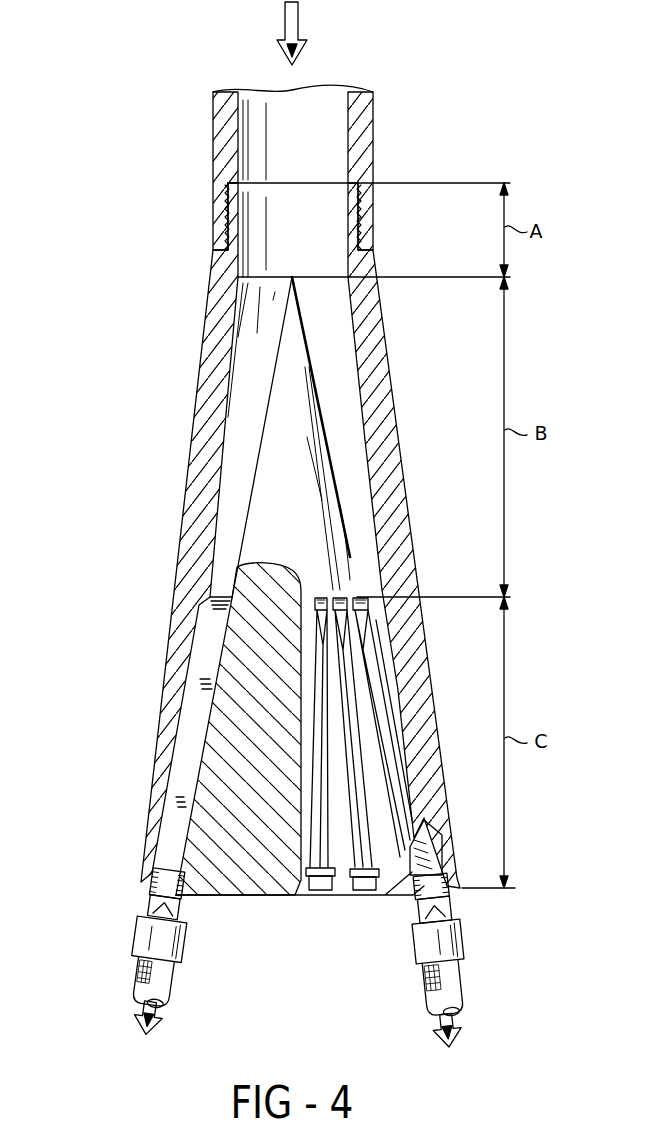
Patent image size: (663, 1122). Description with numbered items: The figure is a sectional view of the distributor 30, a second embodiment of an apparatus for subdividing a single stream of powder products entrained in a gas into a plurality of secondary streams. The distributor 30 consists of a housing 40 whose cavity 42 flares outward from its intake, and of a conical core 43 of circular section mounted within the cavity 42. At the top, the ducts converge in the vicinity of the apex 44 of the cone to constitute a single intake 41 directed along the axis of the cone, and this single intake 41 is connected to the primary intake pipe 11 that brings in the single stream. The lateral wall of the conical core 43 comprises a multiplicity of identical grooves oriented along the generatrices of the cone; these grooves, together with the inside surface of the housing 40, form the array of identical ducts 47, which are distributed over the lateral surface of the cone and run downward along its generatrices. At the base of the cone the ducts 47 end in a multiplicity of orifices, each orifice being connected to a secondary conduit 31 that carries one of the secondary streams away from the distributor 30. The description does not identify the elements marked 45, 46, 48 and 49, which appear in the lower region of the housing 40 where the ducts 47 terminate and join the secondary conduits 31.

The distributor 30 is at (157, 131).
The primary intake pipe 11 is at (362, 143).
The housing 40 is at (190, 507).
The single intake 41 is at (257, 219).
The cavity 42 is at (260, 320).
The conical core 43 is at (297, 390).
The apex 44 is at (293, 304).
The first outlet block 45 is at (320, 862).
The second outlet block 46 is at (343, 863).
The ducts 47 is at (430, 860).
The comb fingers 48 is at (230, 593).
The coupling sleeve 49 is at (148, 902).
The secondary conduit 31 is at (162, 975).